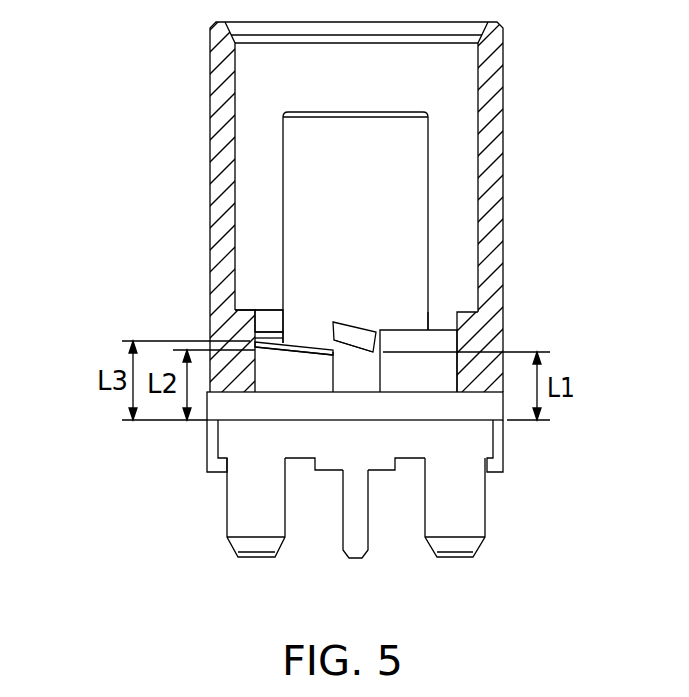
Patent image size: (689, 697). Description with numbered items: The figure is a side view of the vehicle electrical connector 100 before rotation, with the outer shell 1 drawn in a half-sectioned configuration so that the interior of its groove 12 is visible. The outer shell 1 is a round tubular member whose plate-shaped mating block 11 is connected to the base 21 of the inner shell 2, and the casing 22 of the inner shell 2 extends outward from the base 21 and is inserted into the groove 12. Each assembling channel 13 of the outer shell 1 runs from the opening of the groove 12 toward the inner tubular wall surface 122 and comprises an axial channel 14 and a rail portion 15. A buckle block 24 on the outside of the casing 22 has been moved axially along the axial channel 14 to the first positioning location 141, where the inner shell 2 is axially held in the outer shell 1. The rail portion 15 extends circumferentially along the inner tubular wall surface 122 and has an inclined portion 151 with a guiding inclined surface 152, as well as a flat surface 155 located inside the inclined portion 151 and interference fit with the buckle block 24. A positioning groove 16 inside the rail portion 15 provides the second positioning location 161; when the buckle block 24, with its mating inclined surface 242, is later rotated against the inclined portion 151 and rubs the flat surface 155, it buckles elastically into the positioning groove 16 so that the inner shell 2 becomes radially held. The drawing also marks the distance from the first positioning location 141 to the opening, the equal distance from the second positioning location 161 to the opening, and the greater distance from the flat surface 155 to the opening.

The outer shell 1 is at (492, 57).
The inner shell 2 is at (443, 150).
The mating block 11 is at (452, 405).
The groove 12 is at (252, 105).
The inner tubular wall surface 122 is at (478, 226).
The assembling channel 13 is at (247, 443).
The axial channel 14 is at (383, 372).
The first positioning location 141 is at (383, 333).
The rail portion 15 is at (168, 283).
The inclined portion 151 is at (135, 223).
The guiding inclined surface 152 is at (303, 336).
The flat surface 155 is at (270, 328).
The positioning groove 16 is at (262, 343).
The second positioning location 161 is at (250, 350).
The base 21 is at (238, 453).
The casing 22 is at (312, 195).
The buckle block 24 is at (350, 326).
The mating inclined surface 242 is at (362, 348).
The vehicle electrical connector 100 is at (567, 547).